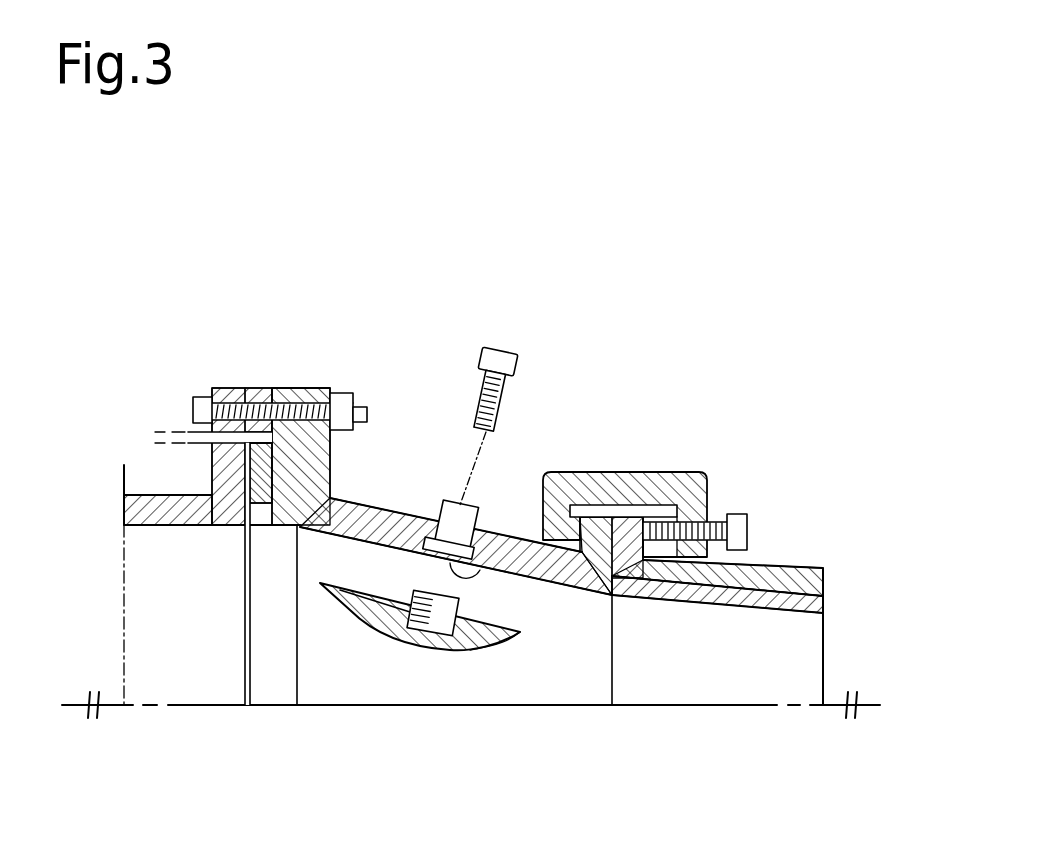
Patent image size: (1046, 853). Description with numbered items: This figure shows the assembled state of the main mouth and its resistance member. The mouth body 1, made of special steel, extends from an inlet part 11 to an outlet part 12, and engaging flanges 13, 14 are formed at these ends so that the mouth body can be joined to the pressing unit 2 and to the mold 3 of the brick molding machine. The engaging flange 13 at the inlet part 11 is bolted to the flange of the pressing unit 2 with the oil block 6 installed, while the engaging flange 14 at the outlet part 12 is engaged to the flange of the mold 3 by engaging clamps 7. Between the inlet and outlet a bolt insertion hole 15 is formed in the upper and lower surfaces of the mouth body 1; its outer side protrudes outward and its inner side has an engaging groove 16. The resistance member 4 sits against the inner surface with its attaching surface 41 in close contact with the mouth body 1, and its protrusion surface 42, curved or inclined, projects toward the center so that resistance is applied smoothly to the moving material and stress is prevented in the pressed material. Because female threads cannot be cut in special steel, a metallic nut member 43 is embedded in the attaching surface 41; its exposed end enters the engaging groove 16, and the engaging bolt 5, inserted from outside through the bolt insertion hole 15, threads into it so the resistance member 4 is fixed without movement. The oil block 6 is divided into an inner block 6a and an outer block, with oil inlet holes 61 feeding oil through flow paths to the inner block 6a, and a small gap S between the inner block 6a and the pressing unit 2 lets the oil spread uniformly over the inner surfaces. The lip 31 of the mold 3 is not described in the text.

The mouth body 1 is at (379, 484).
The pressing unit 2 is at (148, 493).
The mold 3 is at (775, 552).
The cover plate lower lip 31 is at (789, 600).
The resistance member 4 is at (427, 662).
The attaching surface 41 is at (500, 621).
The protrusion surface 42 is at (470, 652).
The nut member 43 is at (388, 613).
The engaging bolt 5 is at (497, 333).
The oil block 6 is at (270, 380).
The inner block 6a is at (273, 505).
The oil inlet hole 61 is at (248, 392).
The inlet part 11 is at (311, 528).
The outlet part 12 is at (597, 597).
The engaging flange 13 is at (310, 390).
The engaging flange 14 is at (593, 472).
The bolt insertion hole 15 is at (453, 502).
The engaging groove 16 is at (494, 533).
The engaging clamp 7 is at (643, 471).
The gap S is at (243, 610).